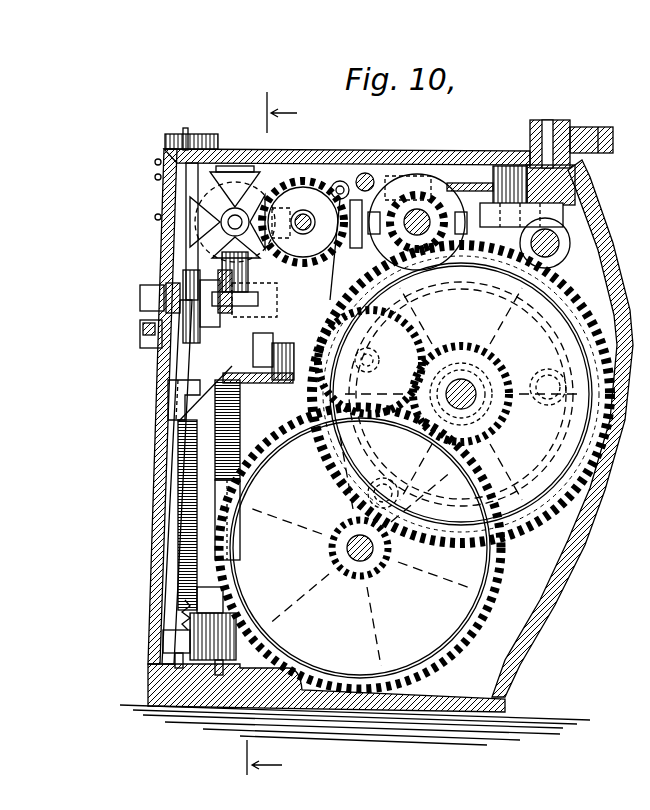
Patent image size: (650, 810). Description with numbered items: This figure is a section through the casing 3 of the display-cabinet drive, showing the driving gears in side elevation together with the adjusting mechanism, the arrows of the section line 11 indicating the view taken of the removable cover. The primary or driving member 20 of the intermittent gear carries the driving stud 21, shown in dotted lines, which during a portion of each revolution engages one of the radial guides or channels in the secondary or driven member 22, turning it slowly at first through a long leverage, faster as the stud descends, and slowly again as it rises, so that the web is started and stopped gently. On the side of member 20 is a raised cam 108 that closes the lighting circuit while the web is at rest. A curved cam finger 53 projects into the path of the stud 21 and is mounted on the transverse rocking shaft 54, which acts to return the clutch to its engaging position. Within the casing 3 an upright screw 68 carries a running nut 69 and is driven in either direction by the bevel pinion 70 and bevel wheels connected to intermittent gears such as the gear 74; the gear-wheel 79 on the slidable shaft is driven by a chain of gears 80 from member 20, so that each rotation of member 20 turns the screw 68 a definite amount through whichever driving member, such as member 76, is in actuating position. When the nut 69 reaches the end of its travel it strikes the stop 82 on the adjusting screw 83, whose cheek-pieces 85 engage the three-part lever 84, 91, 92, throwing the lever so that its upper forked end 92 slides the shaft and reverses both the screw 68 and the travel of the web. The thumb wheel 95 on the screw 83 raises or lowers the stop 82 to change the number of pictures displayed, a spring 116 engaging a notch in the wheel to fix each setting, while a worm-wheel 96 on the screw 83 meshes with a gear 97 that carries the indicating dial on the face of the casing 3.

The casing 3 is at (603, 487).
The section line 11 is at (272, 433).
The primary or driving member 20 is at (461, 394).
The driving stud 21 is at (536, 366).
The secondary or driven member 22 is at (360, 548).
The curved cam finger 53 is at (553, 340).
The transverse rocking shaft 54 is at (557, 233).
The upright screw 68 is at (218, 440).
The running nut 69 is at (207, 597).
The bevel pinion 70 is at (210, 253).
The intermittent gear 74 is at (235, 177).
The driving member 76 is at (345, 184).
The gear-wheel 79 is at (298, 183).
The chain of gears 80 is at (320, 297).
The stop 82 is at (177, 647).
The adjusting screw 83 is at (180, 527).
The shifting lever 84 is at (165, 443).
The cheek-pieces 85 is at (170, 397).
The lever part 91 is at (240, 358).
The upper forked end 92 is at (224, 310).
The thumb wheel 95 is at (180, 133).
The worm-wheel 96 is at (150, 330).
The gear 97 is at (152, 297).
The raised cam 108 is at (415, 288).
The spring 116 is at (162, 155).